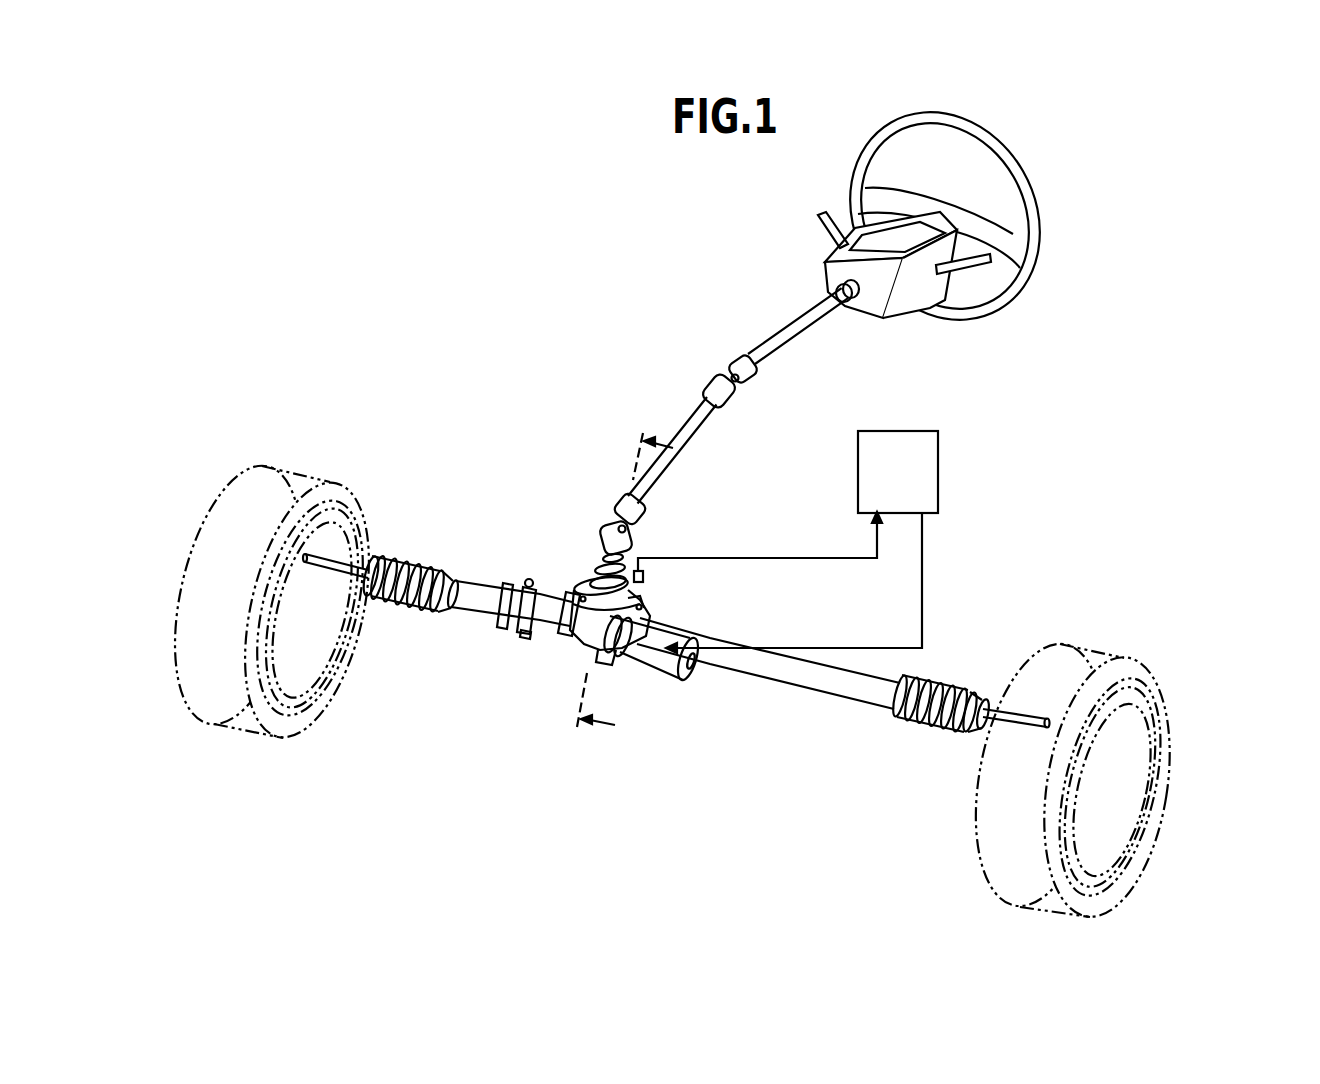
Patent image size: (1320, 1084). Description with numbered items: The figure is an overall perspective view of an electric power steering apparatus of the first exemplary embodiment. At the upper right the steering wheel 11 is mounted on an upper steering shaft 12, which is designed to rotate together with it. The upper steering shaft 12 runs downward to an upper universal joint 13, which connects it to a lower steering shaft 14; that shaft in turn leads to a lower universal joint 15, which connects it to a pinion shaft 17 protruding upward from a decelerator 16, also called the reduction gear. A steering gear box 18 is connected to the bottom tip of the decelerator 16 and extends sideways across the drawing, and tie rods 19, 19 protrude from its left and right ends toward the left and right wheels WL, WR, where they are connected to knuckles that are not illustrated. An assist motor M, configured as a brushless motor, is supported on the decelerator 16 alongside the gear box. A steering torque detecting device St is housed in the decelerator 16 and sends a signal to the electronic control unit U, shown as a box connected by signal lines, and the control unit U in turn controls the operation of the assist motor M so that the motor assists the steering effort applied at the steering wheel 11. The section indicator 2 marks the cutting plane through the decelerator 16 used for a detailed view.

The steering wheel 11 is at (1027, 207).
The upper steering shaft 12 is at (781, 330).
The upper universal joint 13 is at (696, 378).
The lower steering shaft 14 is at (692, 432).
The lower universal joint 15 is at (596, 513).
The decelerator 16 is at (566, 576).
The pinion shaft 17 is at (586, 559).
The steering gear box 18 is at (553, 638).
The tie rods 19 is at (313, 563).
The section line for FIG. 2 is at (626, 577).
The assist motor M is at (638, 660).
The steering torque detecting device St is at (643, 577).
The electronic control unit U is at (889, 486).
The right wheel WR is at (268, 482).
The left wheel WL is at (1133, 753).